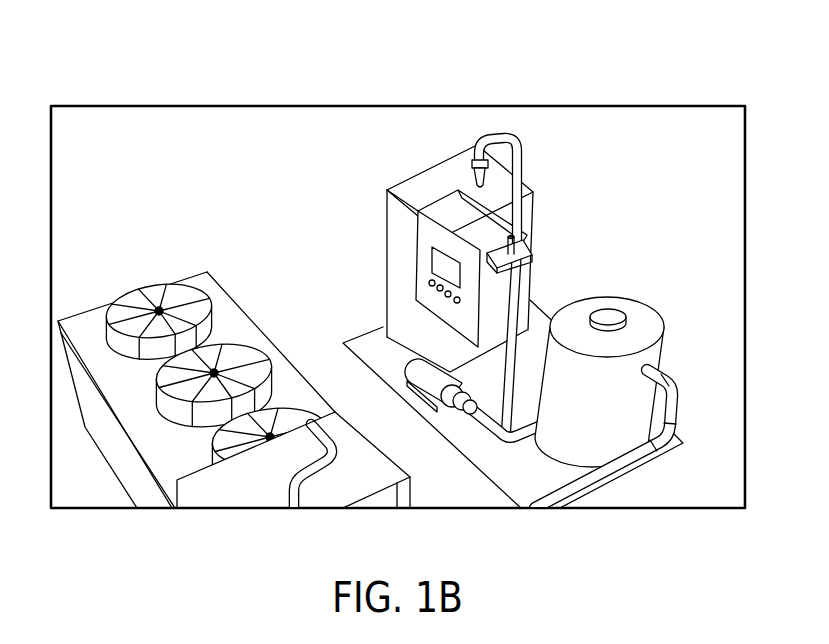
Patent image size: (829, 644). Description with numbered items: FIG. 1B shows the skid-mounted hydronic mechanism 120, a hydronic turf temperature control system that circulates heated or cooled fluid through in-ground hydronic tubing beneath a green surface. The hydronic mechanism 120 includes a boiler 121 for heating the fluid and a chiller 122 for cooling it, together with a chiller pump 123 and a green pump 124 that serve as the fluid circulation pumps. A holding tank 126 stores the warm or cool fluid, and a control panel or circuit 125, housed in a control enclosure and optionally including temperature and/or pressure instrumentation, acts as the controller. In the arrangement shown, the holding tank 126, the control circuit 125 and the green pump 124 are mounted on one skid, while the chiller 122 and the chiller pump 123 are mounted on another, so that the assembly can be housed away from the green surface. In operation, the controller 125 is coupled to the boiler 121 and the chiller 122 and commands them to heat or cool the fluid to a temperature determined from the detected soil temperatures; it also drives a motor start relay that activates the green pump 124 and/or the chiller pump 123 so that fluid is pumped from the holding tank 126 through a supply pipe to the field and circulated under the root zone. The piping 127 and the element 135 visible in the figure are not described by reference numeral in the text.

The hydronic mechanism 120 is at (664, 45).
The boiler 121 is at (440, 185).
The chiller 122 is at (98, 318).
The chiller pump 123 is at (356, 452).
The green pump 124 is at (423, 366).
The control panel or circuit 125 is at (428, 267).
The holding tank 126 is at (625, 302).
The supply line 127 is at (632, 457).
The bracket / mount 135 is at (526, 252).